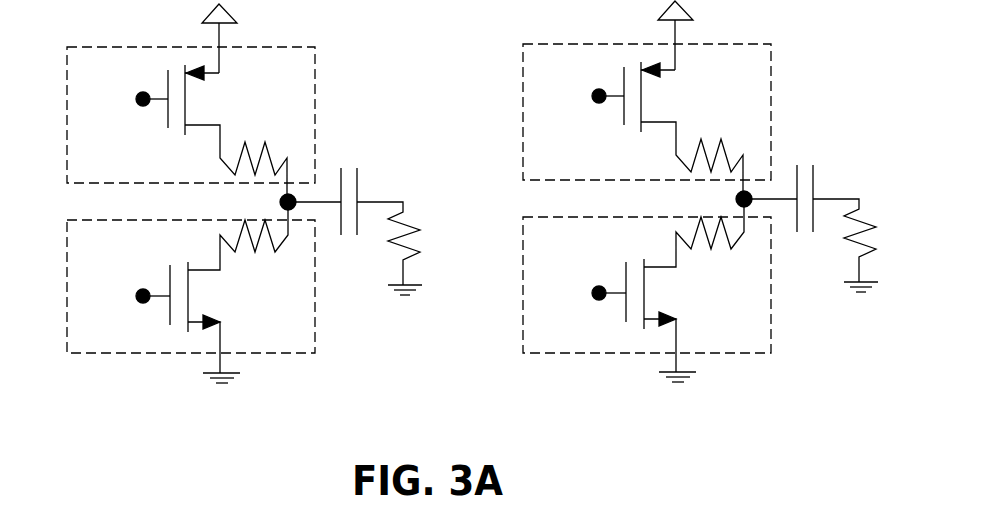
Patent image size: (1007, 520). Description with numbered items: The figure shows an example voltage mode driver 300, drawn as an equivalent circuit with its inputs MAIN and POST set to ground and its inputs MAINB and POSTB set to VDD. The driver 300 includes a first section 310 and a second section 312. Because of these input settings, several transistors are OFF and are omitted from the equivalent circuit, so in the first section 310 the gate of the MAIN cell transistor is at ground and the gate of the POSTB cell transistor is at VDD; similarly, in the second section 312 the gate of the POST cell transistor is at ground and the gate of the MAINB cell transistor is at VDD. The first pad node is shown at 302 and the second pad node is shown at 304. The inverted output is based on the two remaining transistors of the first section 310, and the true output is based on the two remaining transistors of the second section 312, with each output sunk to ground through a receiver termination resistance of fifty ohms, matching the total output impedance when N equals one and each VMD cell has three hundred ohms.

The voltage mode driver 300 is at (455, 245).
The VPAD1 302 is at (262, 202).
The VPAD2 304 is at (715, 199).
The first section 310 is at (238, 211).
The second section 312 is at (674, 209).